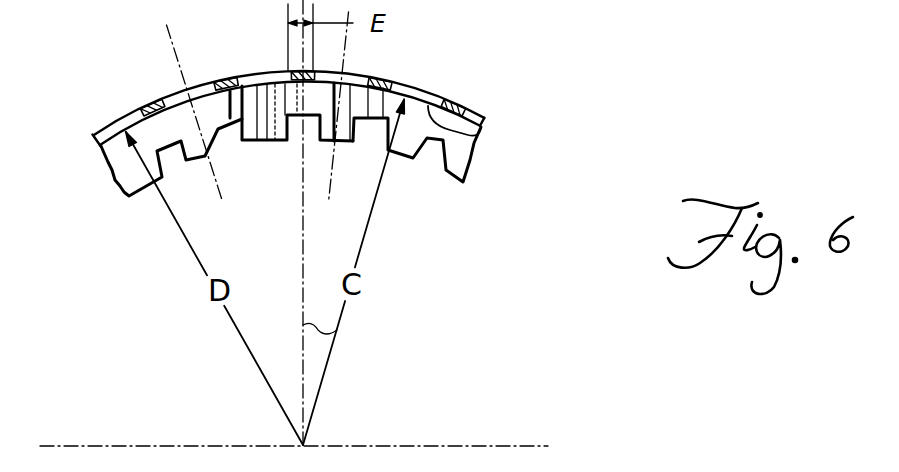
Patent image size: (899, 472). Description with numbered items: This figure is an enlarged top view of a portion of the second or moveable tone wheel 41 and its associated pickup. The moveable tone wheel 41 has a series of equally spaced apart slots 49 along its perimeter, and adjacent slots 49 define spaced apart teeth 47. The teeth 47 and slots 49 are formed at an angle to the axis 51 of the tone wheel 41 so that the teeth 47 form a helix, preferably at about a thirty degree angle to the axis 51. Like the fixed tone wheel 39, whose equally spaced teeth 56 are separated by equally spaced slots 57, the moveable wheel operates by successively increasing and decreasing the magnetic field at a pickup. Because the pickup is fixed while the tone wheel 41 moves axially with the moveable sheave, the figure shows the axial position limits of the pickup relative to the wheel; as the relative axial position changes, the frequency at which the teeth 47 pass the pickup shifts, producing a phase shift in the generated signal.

The fixed tone wheel 39 is at (448, 193).
The moveable tone wheel 41 is at (476, 137).
The teeth 47 is at (214, 86).
The slots 49 is at (169, 94).
The axis 51 is at (340, 338).
The teeth 56 is at (217, 180).
The slots 57 is at (239, 121).